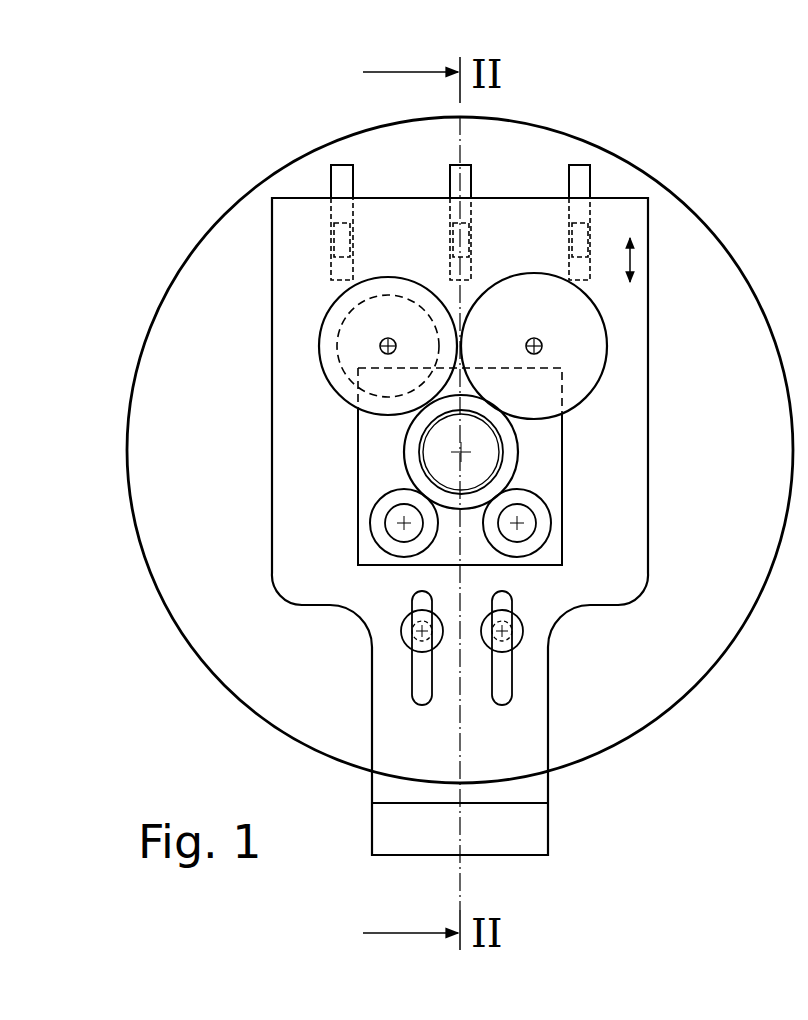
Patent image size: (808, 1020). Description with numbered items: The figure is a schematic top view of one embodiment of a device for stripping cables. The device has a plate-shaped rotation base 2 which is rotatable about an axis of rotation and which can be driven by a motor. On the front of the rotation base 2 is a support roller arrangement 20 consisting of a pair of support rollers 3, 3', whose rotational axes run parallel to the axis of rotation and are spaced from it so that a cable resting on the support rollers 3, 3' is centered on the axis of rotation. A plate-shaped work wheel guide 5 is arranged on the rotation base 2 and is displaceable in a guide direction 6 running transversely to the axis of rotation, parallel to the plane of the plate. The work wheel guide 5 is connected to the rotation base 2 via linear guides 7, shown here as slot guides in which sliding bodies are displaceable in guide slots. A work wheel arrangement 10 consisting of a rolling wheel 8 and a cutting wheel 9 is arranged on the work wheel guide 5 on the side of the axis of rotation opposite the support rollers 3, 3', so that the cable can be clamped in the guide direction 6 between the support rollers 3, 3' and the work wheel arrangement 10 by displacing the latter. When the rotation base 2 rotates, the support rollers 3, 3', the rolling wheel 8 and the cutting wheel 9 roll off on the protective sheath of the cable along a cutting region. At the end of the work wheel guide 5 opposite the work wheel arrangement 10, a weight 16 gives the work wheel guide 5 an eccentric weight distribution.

The rotation base 2 is at (668, 222).
The support roller 3 is at (612, 623).
The support roller 3' is at (290, 600).
The work wheel guide 5 is at (620, 560).
The guide direction 6 is at (632, 260).
The linear guide 7 is at (345, 243).
The rolling wheel 8 is at (568, 336).
The cutting wheel 9 is at (333, 363).
The work wheel arrangement 10 is at (318, 315).
The weight 16 is at (505, 825).
The support roller arrangement 20 is at (348, 512).